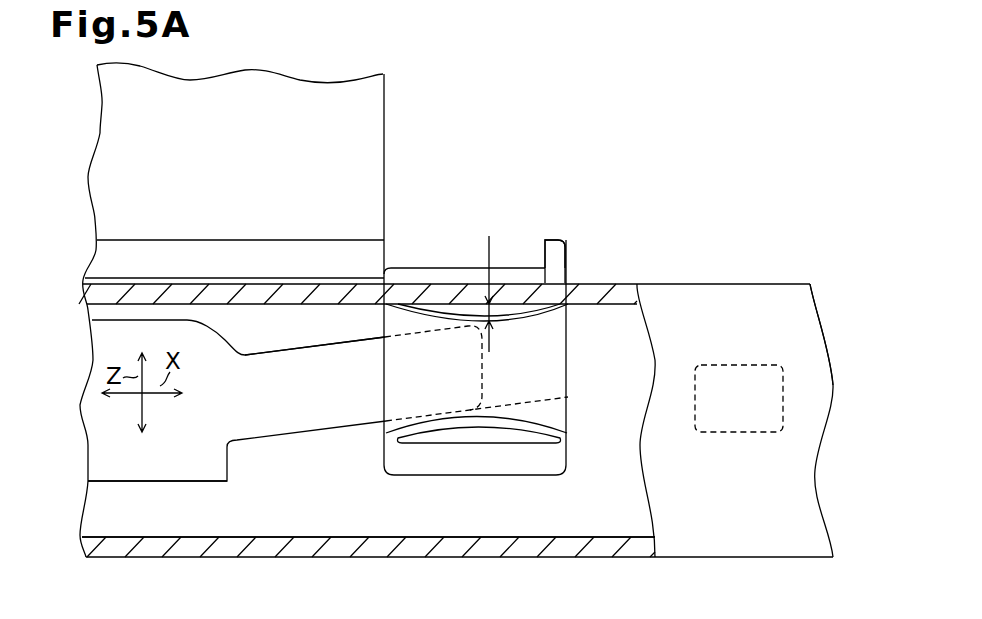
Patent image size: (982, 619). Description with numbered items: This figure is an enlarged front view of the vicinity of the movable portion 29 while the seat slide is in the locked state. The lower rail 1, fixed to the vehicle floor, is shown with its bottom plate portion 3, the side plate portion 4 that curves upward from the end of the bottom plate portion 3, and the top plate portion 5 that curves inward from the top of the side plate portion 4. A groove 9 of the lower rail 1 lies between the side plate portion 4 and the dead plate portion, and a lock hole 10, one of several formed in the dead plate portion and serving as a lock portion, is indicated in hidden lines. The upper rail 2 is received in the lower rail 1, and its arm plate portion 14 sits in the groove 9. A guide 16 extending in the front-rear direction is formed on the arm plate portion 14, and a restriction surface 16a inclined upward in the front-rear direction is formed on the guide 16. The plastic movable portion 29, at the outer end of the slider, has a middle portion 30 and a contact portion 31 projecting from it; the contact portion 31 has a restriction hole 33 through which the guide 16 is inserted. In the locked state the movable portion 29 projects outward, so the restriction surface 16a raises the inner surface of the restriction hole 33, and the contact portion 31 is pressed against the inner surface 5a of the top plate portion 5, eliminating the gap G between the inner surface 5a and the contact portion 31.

The lower rail 1 is at (744, 274).
The upper rail 2 is at (374, 123).
The bottom plate portion 3 is at (315, 545).
The side plate portion 4 is at (800, 312).
The top plate portion 5 is at (343, 292).
The inner surface of top plate portion 5a is at (449, 310).
The groove 9 is at (252, 522).
The lock hole 10 is at (735, 433).
The arm plate portion 14 is at (137, 472).
The guide 16 is at (338, 418).
The restriction surface 16a is at (338, 338).
The movable portion 29 is at (562, 233).
The middle portion 30 is at (415, 266).
The contact portion 31 is at (479, 466).
The restriction hole 33 is at (542, 398).
The gap G is at (489, 281).